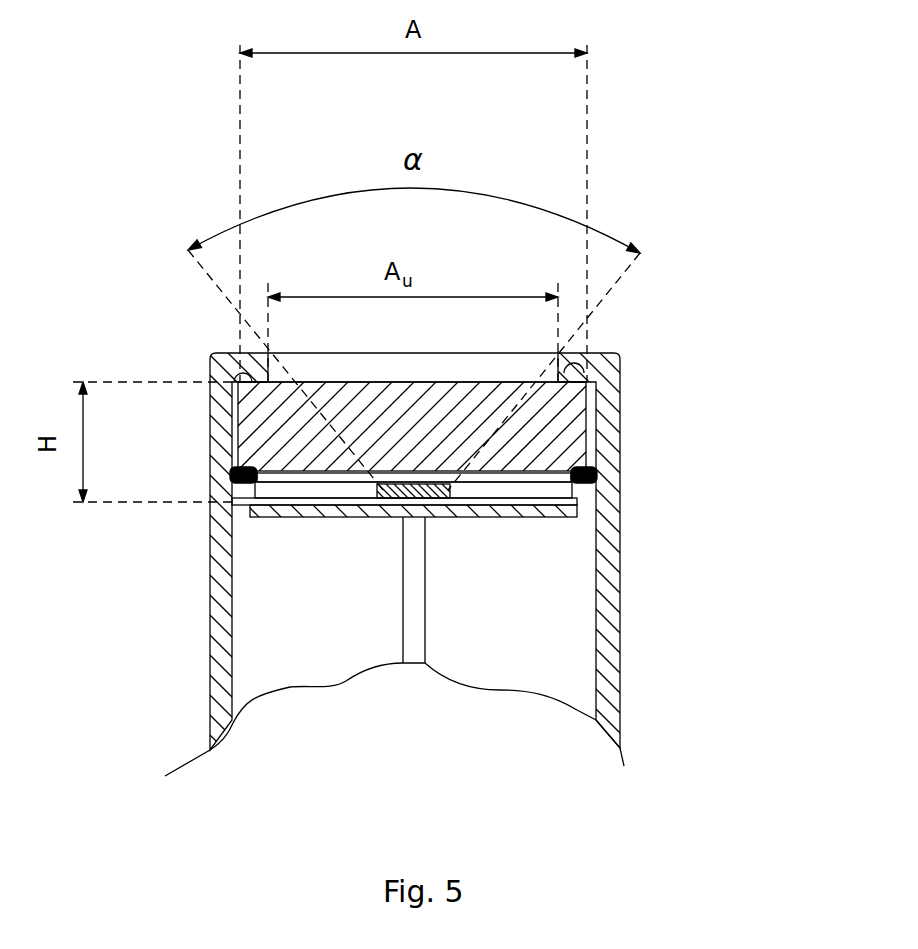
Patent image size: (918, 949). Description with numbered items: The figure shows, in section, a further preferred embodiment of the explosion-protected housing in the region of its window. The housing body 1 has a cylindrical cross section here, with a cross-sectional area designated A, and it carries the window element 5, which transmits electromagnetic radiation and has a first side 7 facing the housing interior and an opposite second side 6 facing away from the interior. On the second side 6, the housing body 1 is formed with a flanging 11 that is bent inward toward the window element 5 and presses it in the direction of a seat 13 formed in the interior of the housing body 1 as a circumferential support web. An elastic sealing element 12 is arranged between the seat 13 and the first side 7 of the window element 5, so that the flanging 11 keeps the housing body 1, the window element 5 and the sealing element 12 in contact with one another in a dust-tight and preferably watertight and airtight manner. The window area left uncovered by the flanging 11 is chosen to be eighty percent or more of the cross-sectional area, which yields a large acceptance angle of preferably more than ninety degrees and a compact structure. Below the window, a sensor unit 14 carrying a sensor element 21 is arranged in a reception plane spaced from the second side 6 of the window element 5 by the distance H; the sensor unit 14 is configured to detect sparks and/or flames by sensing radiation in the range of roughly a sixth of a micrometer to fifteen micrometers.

The housing body 1 is at (438, 517).
The window element 5 is at (550, 412).
The second side 6 is at (498, 380).
The first side 7 is at (290, 505).
The flanging 11 is at (210, 355).
The elastic sealing element 12 is at (582, 482).
The seat 13 is at (242, 502).
The sensor unit 14 is at (353, 517).
The sensor element 21 is at (535, 520).